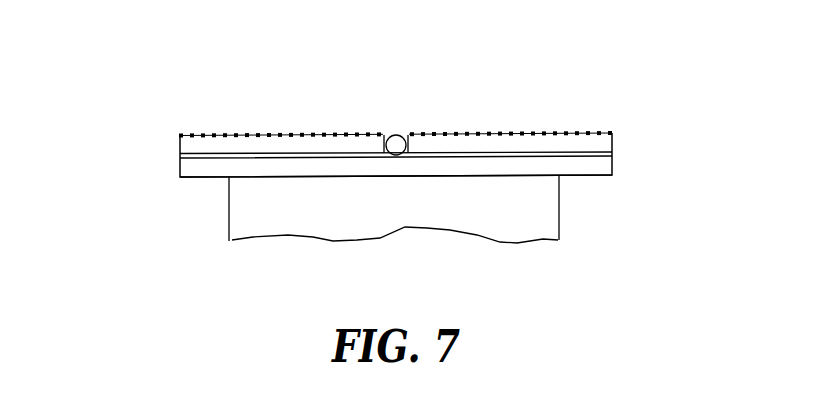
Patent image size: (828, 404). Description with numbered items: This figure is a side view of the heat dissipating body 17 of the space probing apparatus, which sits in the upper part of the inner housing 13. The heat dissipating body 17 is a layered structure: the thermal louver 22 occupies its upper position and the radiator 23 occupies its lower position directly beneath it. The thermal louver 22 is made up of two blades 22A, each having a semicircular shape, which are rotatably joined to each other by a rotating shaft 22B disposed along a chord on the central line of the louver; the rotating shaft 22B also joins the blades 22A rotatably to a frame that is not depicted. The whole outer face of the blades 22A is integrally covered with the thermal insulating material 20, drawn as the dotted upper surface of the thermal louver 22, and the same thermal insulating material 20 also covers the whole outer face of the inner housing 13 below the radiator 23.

The inner housing 13 is at (540, 223).
The heat dissipating body 17 is at (172, 150).
The thermal insulating material 20 is at (344, 140).
The thermal louver 22 is at (619, 134).
The blade 22A is at (268, 135).
The rotating shaft 22B is at (399, 142).
The radiator 23 is at (600, 168).